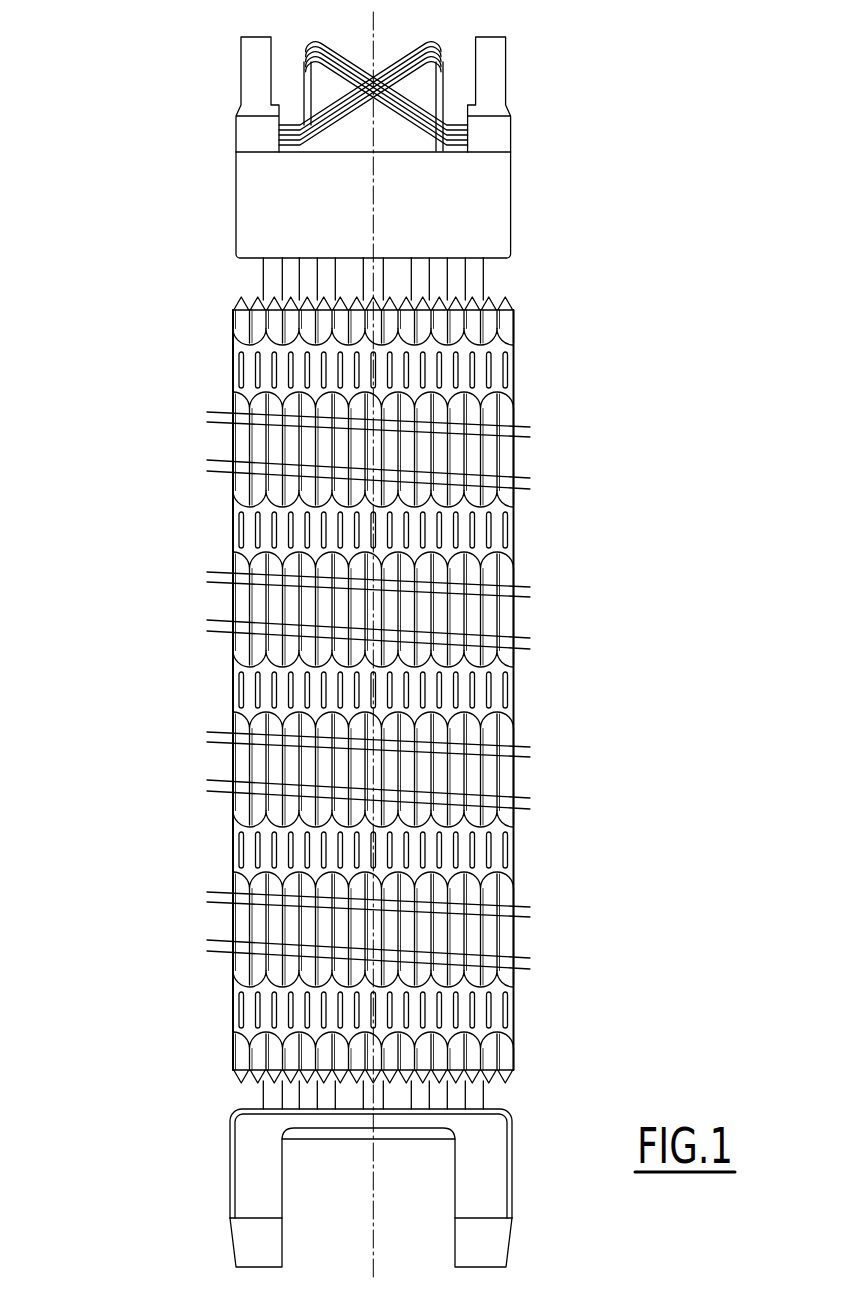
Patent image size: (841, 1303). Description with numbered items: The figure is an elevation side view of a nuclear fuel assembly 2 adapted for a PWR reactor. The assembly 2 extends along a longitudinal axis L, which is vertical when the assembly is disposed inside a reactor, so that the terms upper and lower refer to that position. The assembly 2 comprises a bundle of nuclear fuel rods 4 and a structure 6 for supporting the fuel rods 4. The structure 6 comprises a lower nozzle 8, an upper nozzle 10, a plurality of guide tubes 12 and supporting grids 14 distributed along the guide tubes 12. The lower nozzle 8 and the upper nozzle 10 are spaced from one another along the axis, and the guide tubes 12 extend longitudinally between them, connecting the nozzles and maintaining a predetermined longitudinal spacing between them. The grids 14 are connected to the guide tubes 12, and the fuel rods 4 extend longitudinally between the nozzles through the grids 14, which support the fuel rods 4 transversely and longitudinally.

The nuclear fuel assembly 2 is at (98, 126).
The nuclear fuel rods 4 is at (240, 447).
The structure 6 is at (529, 231).
The lower nozzle 8 is at (207, 1164).
The upper nozzle 10 is at (224, 216).
The guide tubes 12 is at (470, 283).
The supporting grids 14 is at (513, 348).